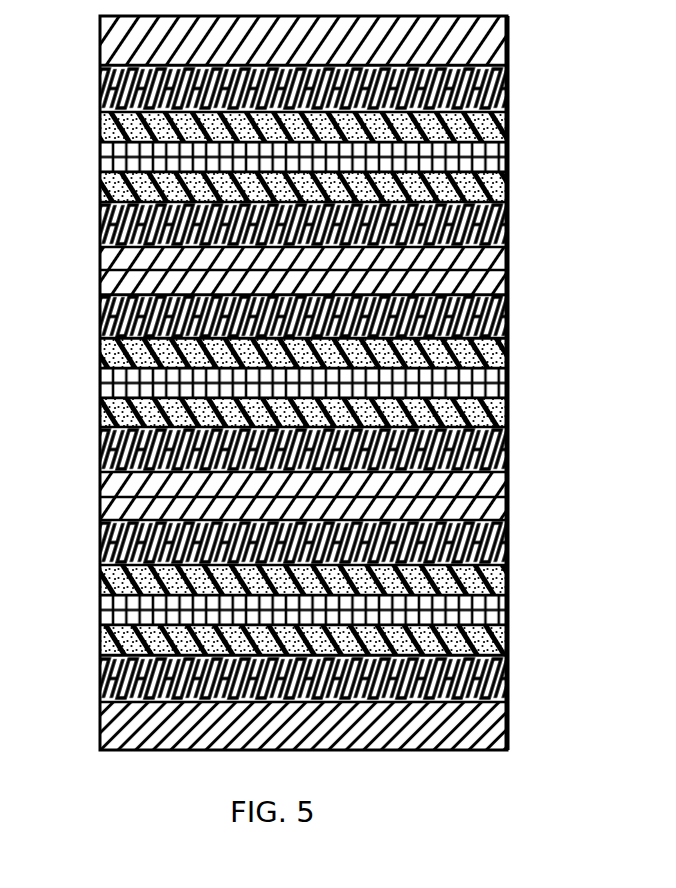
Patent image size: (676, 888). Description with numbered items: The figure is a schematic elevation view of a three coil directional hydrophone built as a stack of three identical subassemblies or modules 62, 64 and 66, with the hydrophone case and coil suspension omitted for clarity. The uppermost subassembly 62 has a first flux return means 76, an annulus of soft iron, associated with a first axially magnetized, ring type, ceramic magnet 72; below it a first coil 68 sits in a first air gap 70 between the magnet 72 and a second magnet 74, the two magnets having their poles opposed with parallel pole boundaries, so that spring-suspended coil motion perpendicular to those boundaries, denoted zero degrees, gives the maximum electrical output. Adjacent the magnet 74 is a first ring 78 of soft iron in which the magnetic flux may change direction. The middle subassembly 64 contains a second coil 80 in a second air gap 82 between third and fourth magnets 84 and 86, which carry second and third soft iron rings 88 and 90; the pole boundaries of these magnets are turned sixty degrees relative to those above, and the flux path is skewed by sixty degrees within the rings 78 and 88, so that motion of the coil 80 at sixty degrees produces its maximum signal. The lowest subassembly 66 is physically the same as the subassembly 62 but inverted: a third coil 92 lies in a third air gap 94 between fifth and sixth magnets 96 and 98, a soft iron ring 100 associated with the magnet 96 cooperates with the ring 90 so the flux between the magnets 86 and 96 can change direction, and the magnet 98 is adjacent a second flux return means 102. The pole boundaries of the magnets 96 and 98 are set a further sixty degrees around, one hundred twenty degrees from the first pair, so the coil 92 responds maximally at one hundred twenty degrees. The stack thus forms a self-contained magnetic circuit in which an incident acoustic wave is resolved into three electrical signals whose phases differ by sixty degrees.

The first subassembly 62 is at (76, 16).
The second subassembly 64 is at (76, 274).
The third subassembly 66 is at (76, 752).
The first flux return means 76 is at (505, 45).
The first magnet 72 is at (500, 97).
The first coil 68 is at (497, 132).
The first air gap 70 is at (497, 182).
The second magnet 74 is at (500, 228).
The first ring 78 is at (500, 262).
The second soft iron ring 88 is at (500, 288).
The third magnet 84 is at (493, 322).
The second air gap 82 is at (497, 357).
The second coil 80 is at (490, 392).
The fourth magnet 86 is at (495, 452).
The third soft iron ring 90 is at (500, 492).
The soft iron ring 100 is at (500, 517).
The fifth magnet 96 is at (498, 554).
The third coil 92 is at (495, 618).
The third air gap 94 is at (500, 651).
The sixth magnet 98 is at (490, 688).
The second flux return means 102 is at (490, 742).